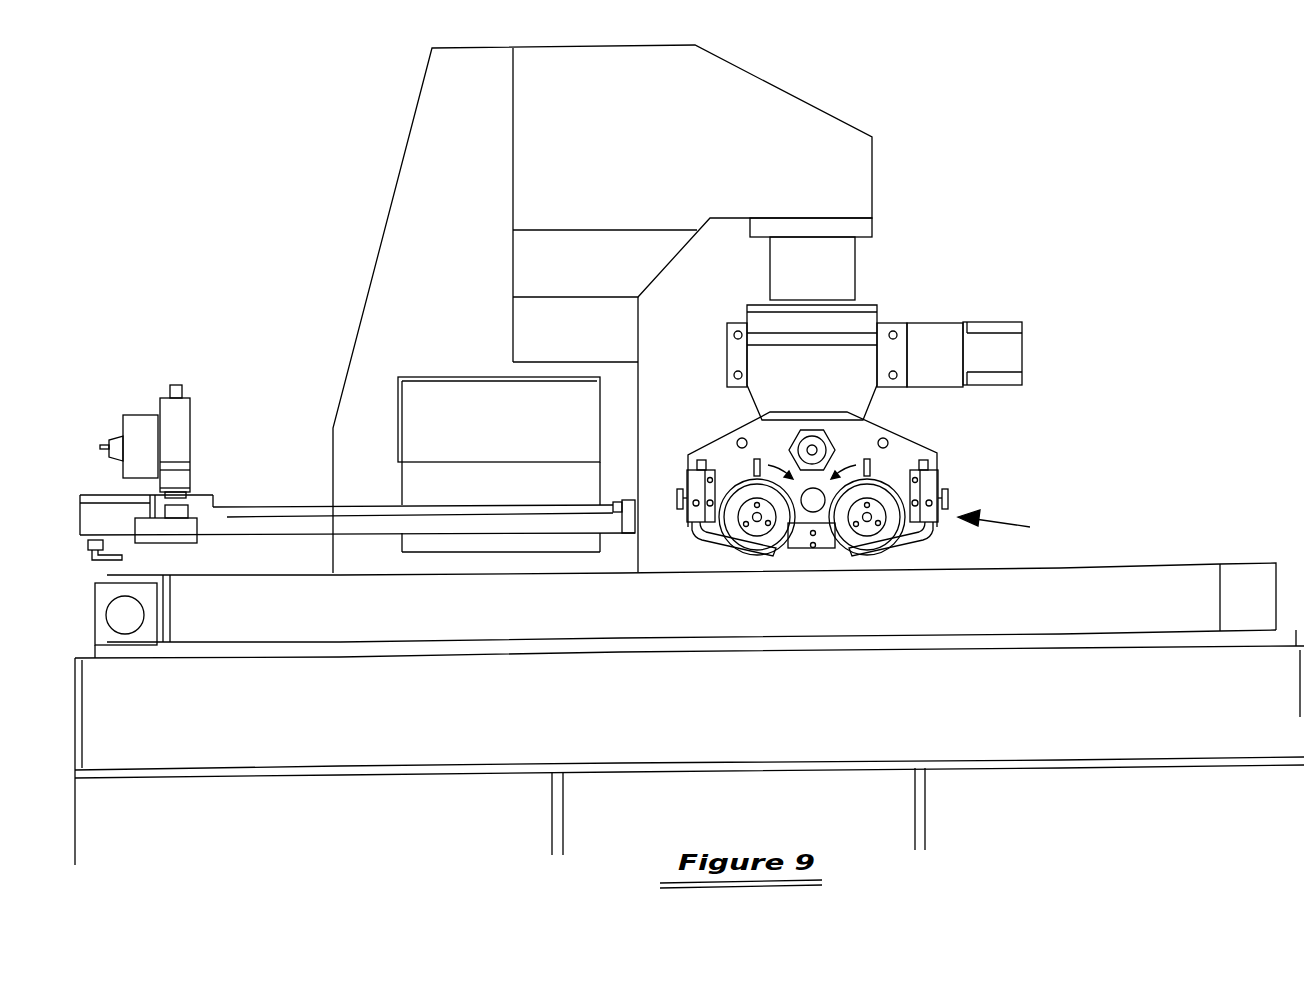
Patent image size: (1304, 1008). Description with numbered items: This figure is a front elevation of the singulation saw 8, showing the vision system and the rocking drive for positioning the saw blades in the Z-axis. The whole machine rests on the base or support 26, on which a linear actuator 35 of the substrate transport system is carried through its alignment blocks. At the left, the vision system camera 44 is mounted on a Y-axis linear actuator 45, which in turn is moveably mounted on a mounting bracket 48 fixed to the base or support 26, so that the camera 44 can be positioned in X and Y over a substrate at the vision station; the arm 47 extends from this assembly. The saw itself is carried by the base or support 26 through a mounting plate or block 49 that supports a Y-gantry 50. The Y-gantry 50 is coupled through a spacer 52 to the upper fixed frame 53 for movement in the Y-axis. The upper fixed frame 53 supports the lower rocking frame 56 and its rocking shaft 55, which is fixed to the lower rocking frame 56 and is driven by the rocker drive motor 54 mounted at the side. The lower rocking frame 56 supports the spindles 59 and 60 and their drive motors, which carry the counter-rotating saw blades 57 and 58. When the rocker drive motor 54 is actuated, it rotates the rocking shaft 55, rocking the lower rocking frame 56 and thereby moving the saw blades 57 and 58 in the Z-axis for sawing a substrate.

The singulation saw 8 is at (1005, 526).
The base or support 26 is at (853, 137).
The linear actuator 35 is at (1112, 585).
The vision system camera 44 is at (192, 428).
The Y-axis linear actuator 45 is at (133, 413).
The support arm 47 is at (295, 520).
The mounting bracket 48 is at (520, 543).
The mounting plate or block 49 is at (855, 229).
The Y-gantry 50 is at (857, 277).
The spacer 52 is at (870, 315).
The upper fixed frame 53 is at (863, 355).
The rocker drive motor 54 is at (1012, 350).
The rocking shaft 55 is at (814, 450).
The lower rocking frame 56 is at (893, 453).
The saw blade 57 is at (887, 547).
The saw blade 58 is at (753, 557).
The spindle 59 is at (873, 513).
The spindle 60 is at (722, 543).